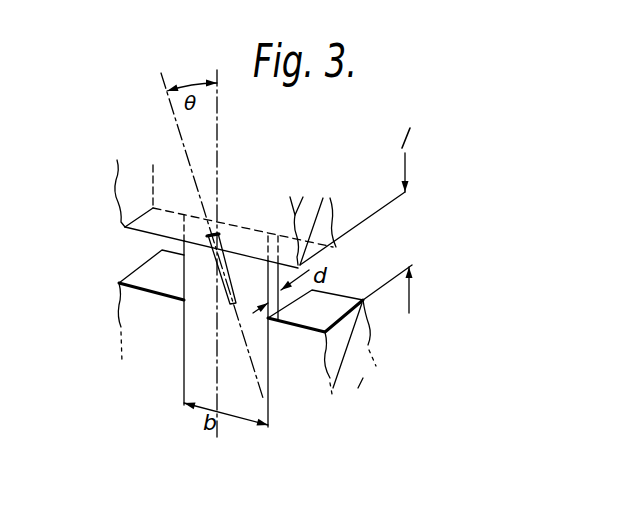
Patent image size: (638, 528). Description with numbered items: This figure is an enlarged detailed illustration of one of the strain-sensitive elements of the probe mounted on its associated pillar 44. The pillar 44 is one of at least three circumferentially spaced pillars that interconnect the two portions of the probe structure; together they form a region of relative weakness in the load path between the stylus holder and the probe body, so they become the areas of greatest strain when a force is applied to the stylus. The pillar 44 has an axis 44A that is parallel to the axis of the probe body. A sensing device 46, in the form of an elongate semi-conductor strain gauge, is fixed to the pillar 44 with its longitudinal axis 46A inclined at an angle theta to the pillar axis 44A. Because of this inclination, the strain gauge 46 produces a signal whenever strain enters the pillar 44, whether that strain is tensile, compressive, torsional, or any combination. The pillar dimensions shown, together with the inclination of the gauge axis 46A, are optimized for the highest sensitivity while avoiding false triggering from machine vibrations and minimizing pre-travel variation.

The pillar 44 is at (183, 276).
The sensing device 46 is at (217, 235).
The axis of the pillar 44A is at (218, 112).
The longitudinal axis of the strain gauge 46A is at (167, 100).